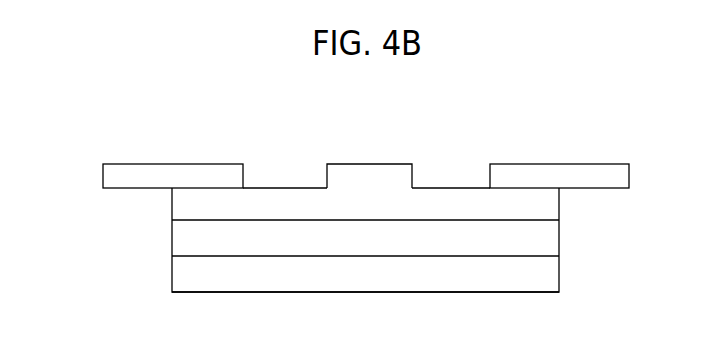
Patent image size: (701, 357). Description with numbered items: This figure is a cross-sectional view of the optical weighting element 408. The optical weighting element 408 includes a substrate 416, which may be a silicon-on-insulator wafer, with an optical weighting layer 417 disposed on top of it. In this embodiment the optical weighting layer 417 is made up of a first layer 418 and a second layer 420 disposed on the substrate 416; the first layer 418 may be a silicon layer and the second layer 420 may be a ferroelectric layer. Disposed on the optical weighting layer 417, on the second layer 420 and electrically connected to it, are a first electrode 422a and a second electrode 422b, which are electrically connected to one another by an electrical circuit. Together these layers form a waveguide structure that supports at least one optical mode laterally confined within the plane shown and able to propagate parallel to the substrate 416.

The optical weighting element 408 is at (247, 111).
The substrate 416 is at (553, 278).
The optical weighting layer 417 is at (157, 192).
The first layer 418 is at (553, 233).
The second layer 420 is at (370, 178).
The first electrode 422a is at (170, 178).
The second electrode 422b is at (555, 178).